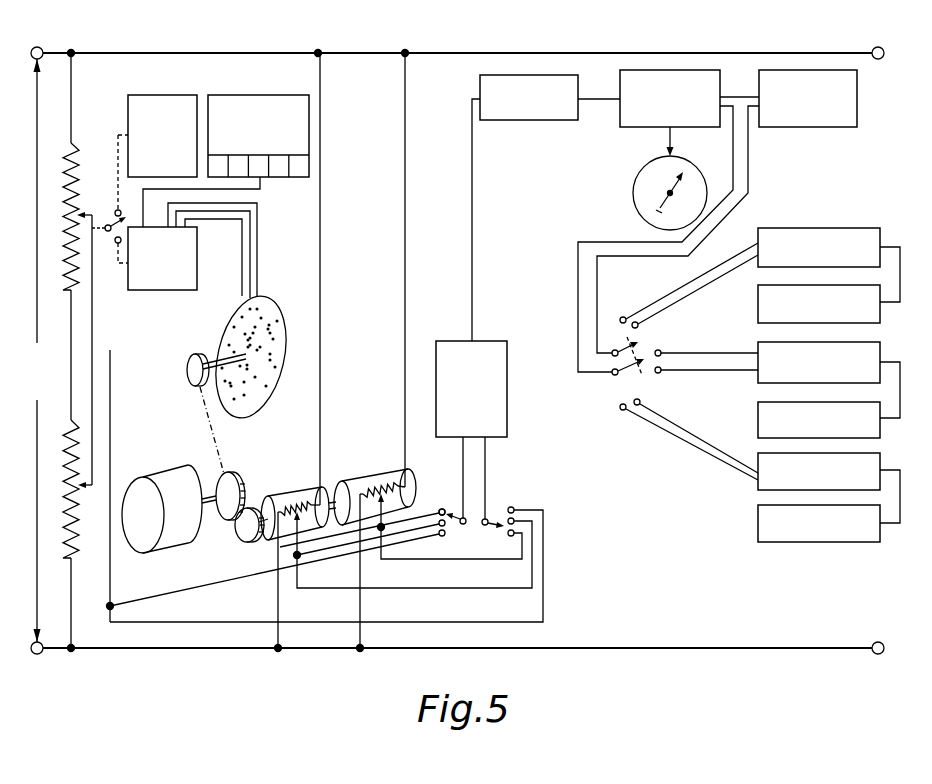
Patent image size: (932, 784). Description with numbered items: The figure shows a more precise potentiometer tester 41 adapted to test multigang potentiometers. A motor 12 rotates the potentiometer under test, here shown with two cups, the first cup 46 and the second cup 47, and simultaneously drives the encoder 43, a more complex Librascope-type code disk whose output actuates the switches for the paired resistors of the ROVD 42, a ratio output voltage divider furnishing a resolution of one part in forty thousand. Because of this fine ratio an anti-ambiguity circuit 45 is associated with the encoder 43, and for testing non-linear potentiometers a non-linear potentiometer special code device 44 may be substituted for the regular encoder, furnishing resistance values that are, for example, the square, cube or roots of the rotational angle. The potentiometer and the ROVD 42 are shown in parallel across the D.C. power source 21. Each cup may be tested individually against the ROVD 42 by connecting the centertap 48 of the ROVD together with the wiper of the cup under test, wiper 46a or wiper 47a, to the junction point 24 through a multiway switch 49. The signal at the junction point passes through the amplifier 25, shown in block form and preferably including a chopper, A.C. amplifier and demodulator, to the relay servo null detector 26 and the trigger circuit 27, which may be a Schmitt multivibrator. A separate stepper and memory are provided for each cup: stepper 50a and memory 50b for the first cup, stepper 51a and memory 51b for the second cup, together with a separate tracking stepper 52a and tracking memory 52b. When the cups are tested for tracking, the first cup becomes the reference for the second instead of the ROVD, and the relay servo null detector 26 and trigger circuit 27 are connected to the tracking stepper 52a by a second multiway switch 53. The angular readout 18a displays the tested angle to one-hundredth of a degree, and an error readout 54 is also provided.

The motor 12 is at (158, 473).
The angular readout 18a is at (287, 89).
The D.C. power source 21 is at (35, 350).
The junction point 24 is at (507, 419).
The amplifier 25 is at (556, 121).
The relay servo null detector 26 is at (625, 128).
The trigger circuit 27 is at (857, 112).
The potentiometer tester 41 is at (575, 647).
The ROVD 42 is at (78, 145).
The encoder 43 is at (263, 311).
The non-linear potentiometer special code device 44 is at (184, 95).
The anti-ambiguity circuit 45 is at (167, 291).
The cup No. 1 46 is at (300, 467).
The wiper 46a is at (279, 548).
The cup No. 2 47 is at (370, 478).
The wiper 47a is at (440, 510).
The centertap 48 is at (128, 339).
The multiway switch 49 is at (465, 525).
The stepper 50a is at (860, 232).
The memory 50b is at (758, 315).
The stepper 51a is at (766, 342).
The memory 51b is at (758, 415).
The tracking stepper 52a is at (760, 490).
The tracking memory 52b is at (758, 528).
The second multiway switch 53 is at (633, 380).
The error readout 54 is at (637, 201).